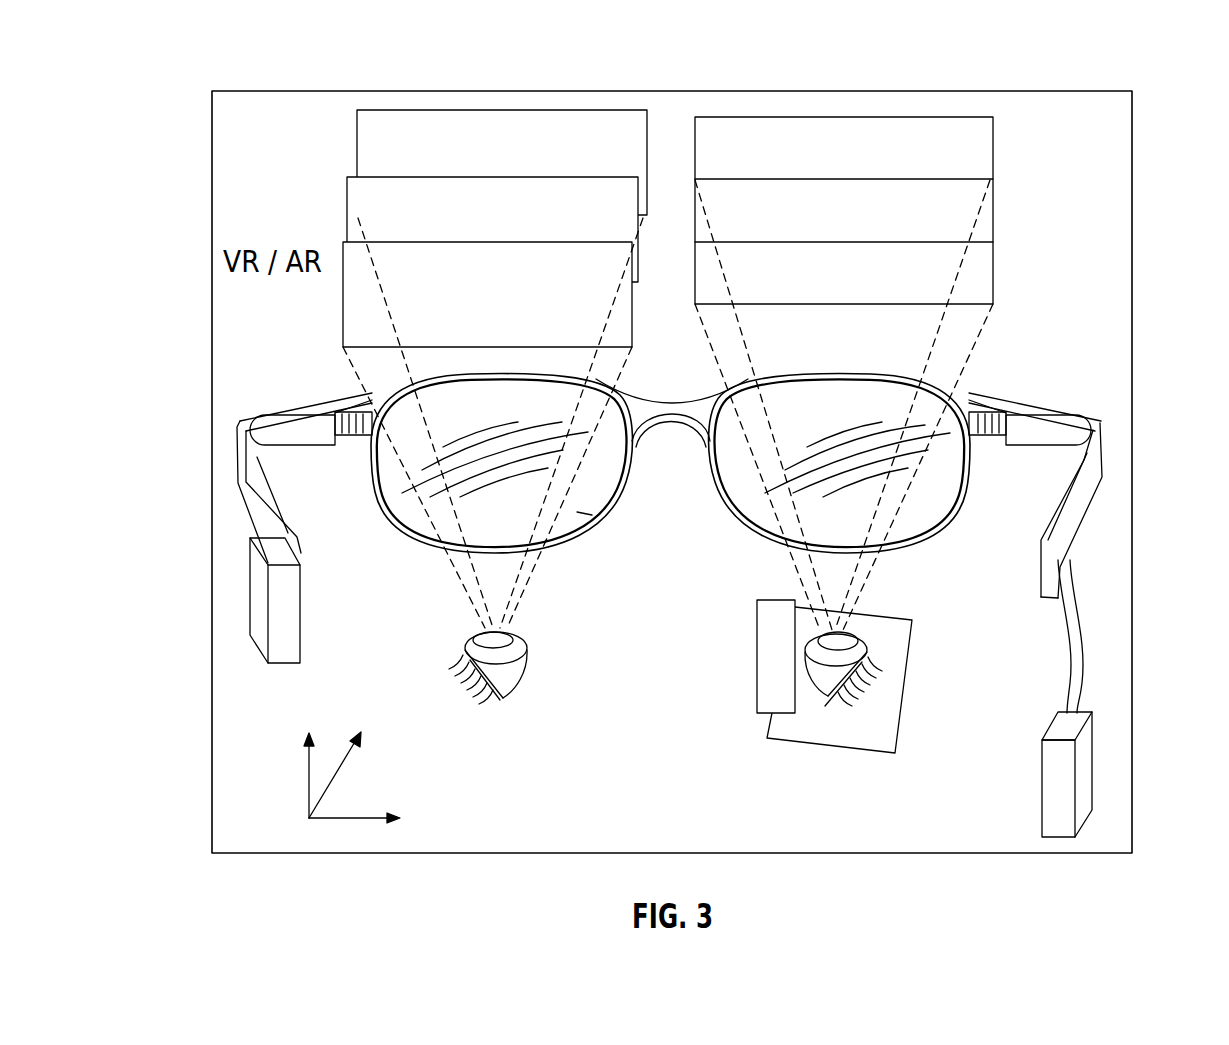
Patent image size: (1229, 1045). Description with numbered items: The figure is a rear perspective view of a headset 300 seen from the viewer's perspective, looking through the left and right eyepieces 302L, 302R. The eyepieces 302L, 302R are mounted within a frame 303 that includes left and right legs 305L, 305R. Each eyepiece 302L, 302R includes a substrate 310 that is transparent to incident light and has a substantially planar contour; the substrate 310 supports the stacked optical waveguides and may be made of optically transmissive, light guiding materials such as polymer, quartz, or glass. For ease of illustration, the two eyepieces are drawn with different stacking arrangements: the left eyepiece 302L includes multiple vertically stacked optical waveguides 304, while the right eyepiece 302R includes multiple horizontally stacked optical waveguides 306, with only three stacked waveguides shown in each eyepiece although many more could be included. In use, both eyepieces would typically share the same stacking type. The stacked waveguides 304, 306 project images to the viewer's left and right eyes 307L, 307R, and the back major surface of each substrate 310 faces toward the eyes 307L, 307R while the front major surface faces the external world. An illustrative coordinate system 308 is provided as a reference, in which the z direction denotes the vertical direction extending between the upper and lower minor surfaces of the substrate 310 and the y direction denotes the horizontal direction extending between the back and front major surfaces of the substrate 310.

The headset 300 is at (998, 147).
The left eyepiece 302L is at (412, 418).
The right eyepiece 302R is at (853, 401).
The frame 303 is at (408, 545).
The vertically stacked optical waveguides 304 is at (490, 110).
The left leg 305L is at (248, 490).
The right leg 305R is at (1073, 533).
The horizontally stacked optical waveguides 306 is at (843, 117).
The left eye 307L is at (467, 640).
The right eye 307R is at (893, 642).
The coordinate system 308 is at (309, 783).
The substrate 310 is at (738, 475).